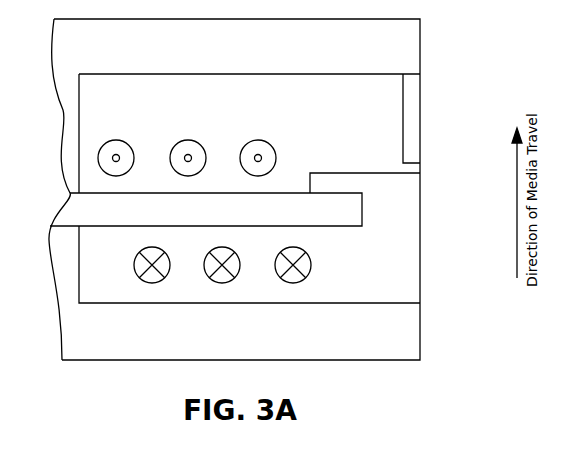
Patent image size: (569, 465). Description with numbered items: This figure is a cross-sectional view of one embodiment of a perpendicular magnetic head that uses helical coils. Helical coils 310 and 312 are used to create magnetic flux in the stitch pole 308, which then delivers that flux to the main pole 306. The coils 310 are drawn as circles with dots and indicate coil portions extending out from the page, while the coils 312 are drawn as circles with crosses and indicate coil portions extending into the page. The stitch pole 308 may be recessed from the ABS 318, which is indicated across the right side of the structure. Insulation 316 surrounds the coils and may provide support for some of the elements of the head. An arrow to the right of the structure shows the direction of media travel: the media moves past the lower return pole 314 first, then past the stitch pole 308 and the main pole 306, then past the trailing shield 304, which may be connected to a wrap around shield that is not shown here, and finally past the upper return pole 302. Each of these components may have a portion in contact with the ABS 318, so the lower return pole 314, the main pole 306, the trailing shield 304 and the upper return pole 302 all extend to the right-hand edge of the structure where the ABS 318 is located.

The upper return pole 302 is at (325, 57).
The trailing shield 304 is at (421, 122).
The main pole 306 is at (421, 178).
The stitch pole 308 is at (232, 221).
The helical coils (extending out from the page) 310 is at (115, 140).
The helical coils (extending into the page) 312 is at (134, 268).
The lower return pole 314 is at (232, 344).
The insulation 316 is at (365, 132).
The ABS 318 is at (421, 40).